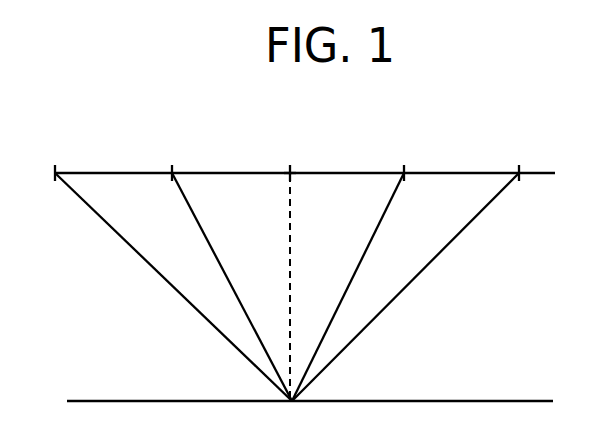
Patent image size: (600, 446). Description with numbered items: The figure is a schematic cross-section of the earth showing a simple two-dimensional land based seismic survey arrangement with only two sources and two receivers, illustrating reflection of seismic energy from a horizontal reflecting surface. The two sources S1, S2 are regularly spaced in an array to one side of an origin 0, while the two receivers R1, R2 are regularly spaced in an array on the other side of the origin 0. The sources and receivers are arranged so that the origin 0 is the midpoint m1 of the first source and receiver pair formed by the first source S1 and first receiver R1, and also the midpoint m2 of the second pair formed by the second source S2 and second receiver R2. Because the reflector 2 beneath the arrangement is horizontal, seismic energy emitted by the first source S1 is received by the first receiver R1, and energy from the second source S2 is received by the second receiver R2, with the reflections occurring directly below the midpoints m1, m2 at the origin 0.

The first source S1 is at (166, 263).
The second source S2 is at (226, 263).
The first receiver R1 is at (410, 263).
The second receiver R2 is at (353, 263).
The midpoint of first source and receiver pair m1 is at (282, 144).
The midpoint of second source and receiver pair m2 is at (282, 153).
The origin 0 is at (288, 176).
The reflector 2 is at (443, 401).